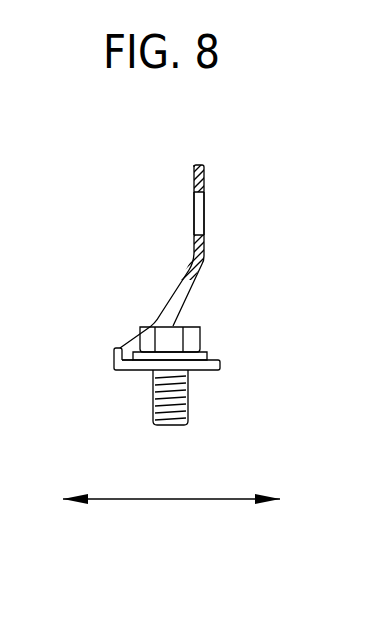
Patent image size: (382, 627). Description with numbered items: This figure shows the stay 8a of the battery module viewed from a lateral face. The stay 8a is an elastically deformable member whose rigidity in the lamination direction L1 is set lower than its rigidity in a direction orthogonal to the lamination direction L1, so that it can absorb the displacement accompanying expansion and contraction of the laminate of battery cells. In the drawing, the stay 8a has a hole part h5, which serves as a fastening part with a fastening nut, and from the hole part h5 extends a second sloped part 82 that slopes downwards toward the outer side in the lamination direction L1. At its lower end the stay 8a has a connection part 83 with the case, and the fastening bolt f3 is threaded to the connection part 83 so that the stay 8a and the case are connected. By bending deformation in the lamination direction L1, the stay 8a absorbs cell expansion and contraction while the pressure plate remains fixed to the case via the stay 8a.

The stay 8a is at (243, 175).
The hole part h5 is at (194, 208).
The second sloped part 82 is at (171, 291).
The fastening bolt f3 is at (191, 326).
The connection part 83 is at (197, 367).
The lamination direction L1 is at (182, 500).